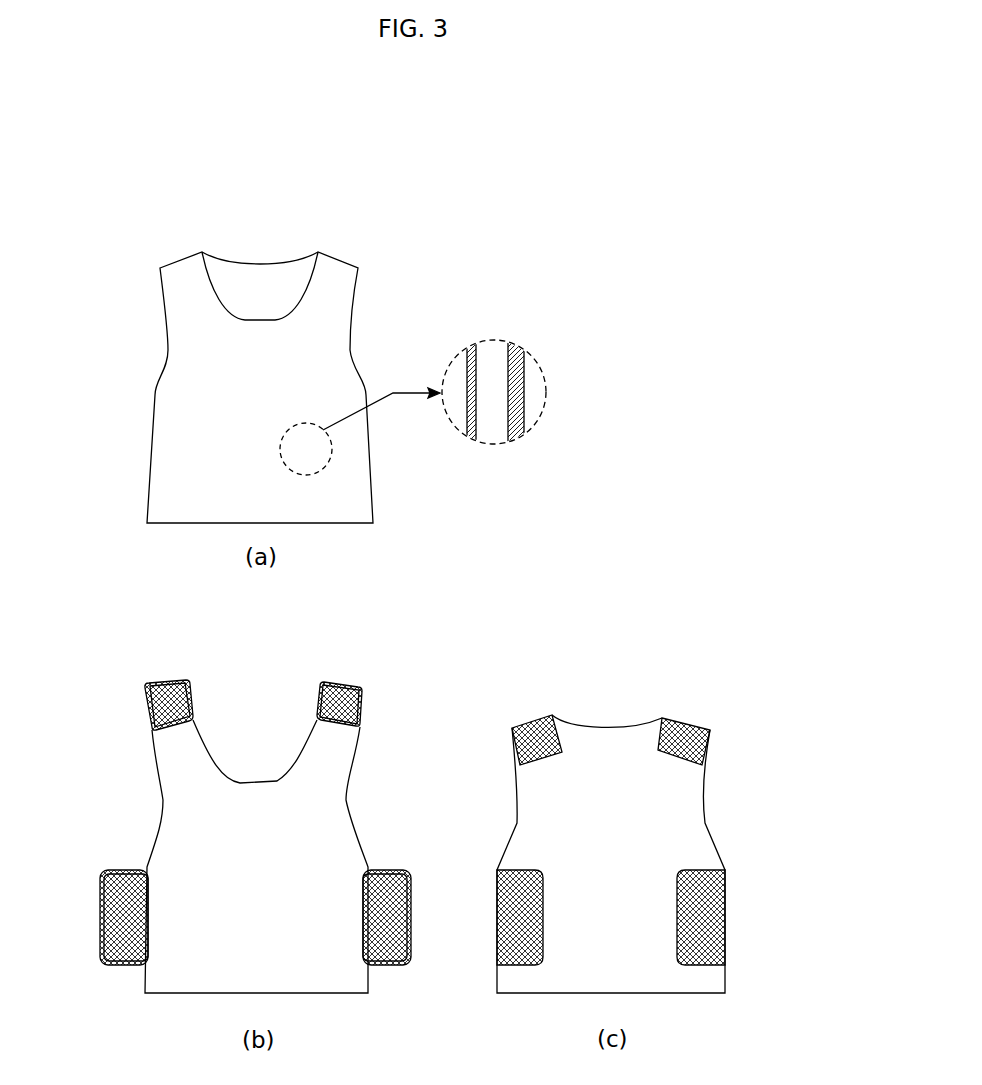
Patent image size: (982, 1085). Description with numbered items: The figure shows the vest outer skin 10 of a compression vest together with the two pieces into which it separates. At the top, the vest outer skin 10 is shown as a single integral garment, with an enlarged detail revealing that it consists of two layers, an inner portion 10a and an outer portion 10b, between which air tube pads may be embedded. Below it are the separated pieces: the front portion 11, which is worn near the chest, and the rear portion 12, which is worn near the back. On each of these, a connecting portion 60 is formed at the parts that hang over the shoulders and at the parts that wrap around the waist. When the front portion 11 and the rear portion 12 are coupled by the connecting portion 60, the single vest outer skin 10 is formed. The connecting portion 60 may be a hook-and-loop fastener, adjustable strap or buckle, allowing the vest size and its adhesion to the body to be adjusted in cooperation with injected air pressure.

The vest outer skin 10 is at (347, 248).
The inner portion 10a is at (468, 385).
The outer portion 10b is at (523, 383).
The front portion 11 is at (160, 803).
The rear portion 12 is at (707, 803).
The connecting portion 60 is at (163, 685).